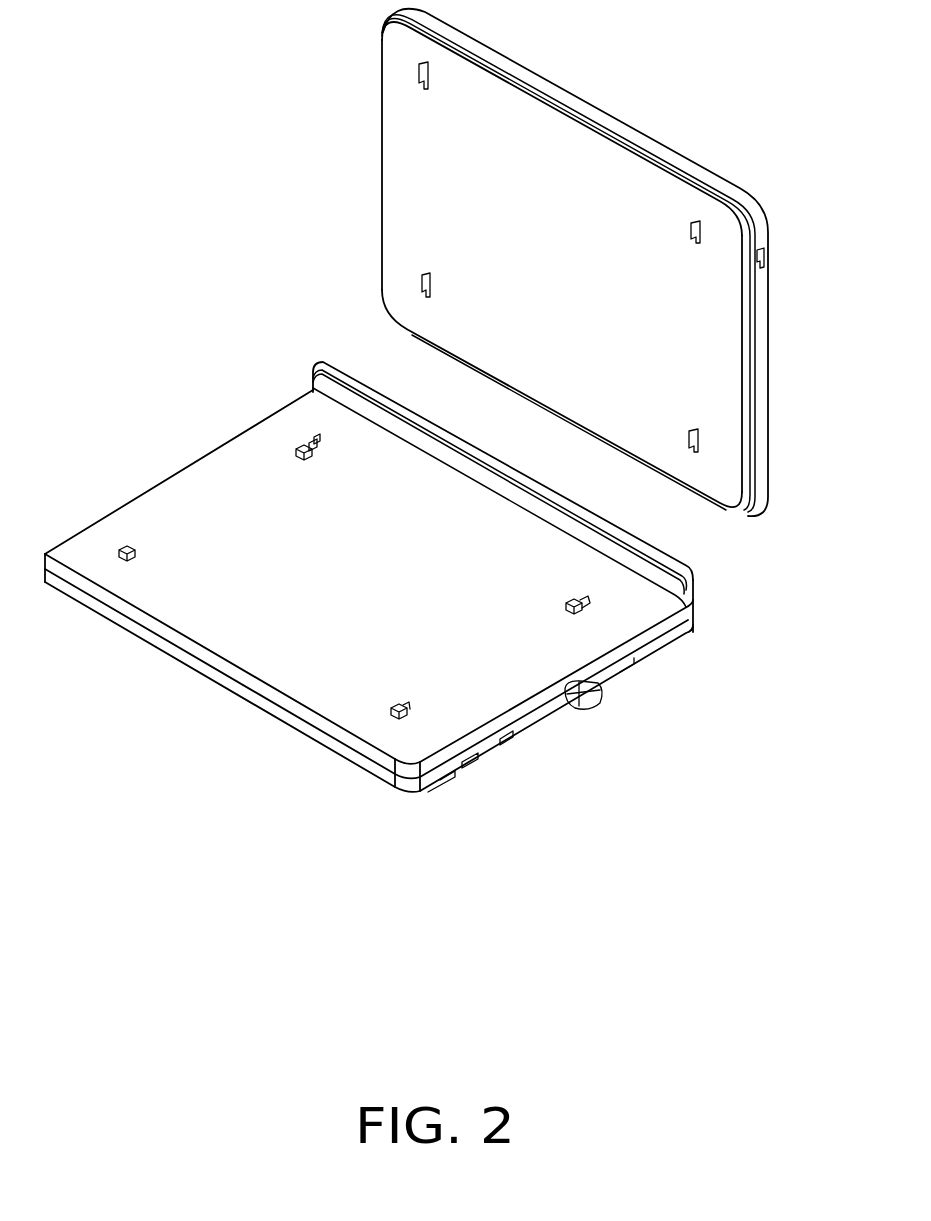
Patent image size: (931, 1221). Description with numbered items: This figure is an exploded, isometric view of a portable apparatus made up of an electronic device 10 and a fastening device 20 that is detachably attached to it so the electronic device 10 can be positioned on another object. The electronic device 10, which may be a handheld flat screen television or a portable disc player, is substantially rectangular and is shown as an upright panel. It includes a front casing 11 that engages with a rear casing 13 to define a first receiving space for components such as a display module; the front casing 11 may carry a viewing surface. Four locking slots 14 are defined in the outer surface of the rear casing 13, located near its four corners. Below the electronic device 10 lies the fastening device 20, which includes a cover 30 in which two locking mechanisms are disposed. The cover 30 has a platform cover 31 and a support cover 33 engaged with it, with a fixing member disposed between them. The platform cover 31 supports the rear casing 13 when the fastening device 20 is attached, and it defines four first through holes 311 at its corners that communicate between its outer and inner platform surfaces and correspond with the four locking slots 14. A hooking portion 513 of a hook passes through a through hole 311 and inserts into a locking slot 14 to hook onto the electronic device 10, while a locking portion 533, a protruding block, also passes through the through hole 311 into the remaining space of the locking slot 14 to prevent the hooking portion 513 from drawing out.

The electronic device 10 is at (564, 70).
The front casing 11 is at (645, 147).
The rear casing 13 is at (700, 358).
The locking slots 14 is at (422, 280).
The fastening device 20 is at (177, 692).
The cover 30 is at (369, 717).
The platform cover 31 is at (365, 748).
The support cover 33 is at (288, 718).
The first through holes 311 is at (294, 453).
The hooking portion 513 is at (312, 439).
The locking portion 533 is at (299, 445).